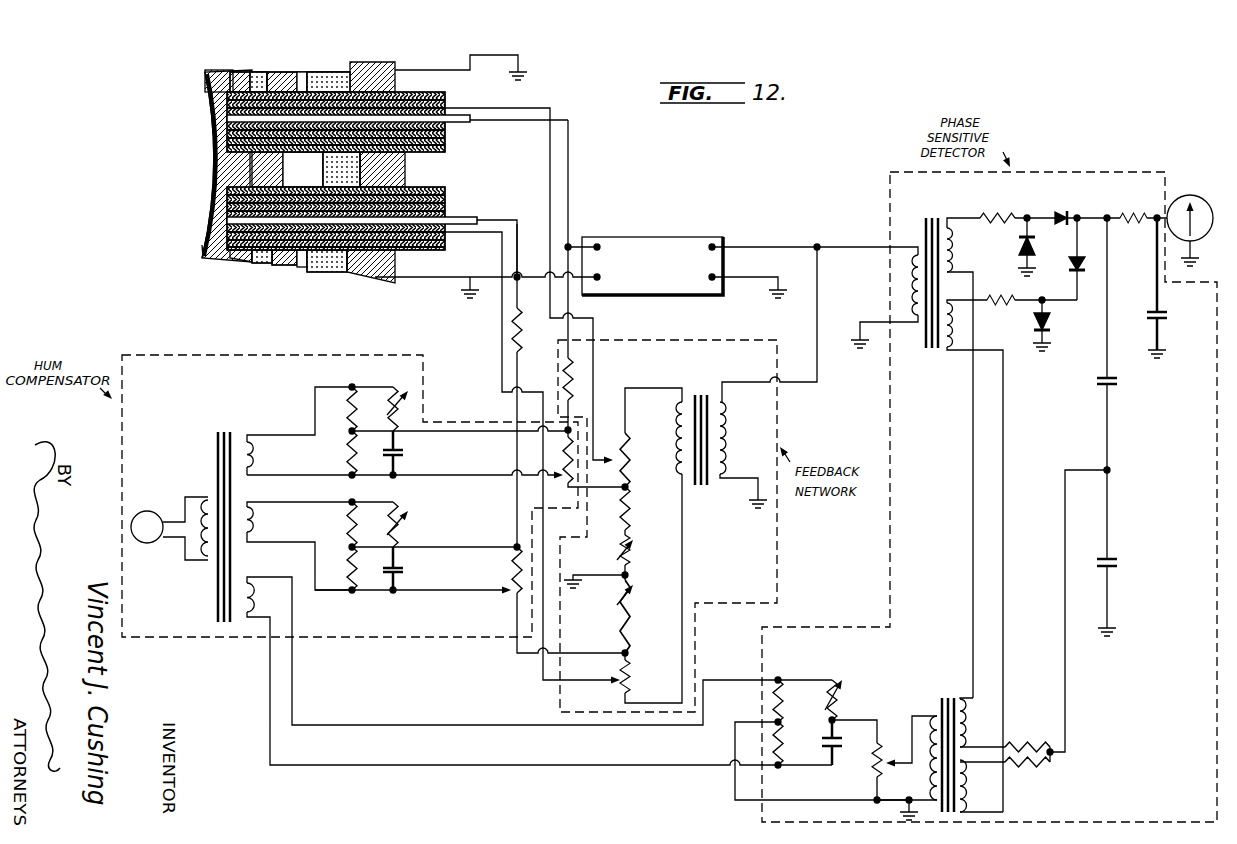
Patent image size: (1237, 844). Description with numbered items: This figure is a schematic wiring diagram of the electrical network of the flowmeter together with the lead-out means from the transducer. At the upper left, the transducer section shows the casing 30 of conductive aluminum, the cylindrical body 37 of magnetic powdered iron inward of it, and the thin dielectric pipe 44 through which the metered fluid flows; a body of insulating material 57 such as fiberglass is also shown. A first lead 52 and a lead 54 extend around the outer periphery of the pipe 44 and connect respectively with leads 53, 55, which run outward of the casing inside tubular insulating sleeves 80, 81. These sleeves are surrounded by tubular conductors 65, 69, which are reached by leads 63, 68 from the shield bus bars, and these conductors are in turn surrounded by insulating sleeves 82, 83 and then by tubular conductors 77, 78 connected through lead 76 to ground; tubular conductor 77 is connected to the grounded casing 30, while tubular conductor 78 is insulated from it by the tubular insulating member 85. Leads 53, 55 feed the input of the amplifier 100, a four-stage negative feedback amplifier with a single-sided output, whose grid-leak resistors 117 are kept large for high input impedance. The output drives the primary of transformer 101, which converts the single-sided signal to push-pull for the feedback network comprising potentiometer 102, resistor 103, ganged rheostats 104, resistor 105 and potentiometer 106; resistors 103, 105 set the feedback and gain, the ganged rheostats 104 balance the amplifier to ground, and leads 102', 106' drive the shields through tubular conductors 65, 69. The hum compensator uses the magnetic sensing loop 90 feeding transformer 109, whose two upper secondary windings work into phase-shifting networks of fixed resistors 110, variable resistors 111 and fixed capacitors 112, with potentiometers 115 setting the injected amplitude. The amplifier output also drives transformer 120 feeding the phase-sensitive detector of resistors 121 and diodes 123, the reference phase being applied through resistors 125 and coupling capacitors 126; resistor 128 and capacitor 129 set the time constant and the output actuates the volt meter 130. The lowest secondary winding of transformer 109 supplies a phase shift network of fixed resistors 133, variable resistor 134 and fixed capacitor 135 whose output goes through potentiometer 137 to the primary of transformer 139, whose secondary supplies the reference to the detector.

The casing 30 is at (382, 62).
The cylindrical body 37 is at (330, 70).
The pipe 44 is at (222, 170).
The first lead 52 is at (200, 100).
The lead 53 is at (228, 123).
The lead 54 is at (203, 250).
The lead 55 is at (227, 220).
The body of insulating material 57 is at (218, 75).
The lead 63 is at (243, 90).
The tubular conductor 65 is at (283, 90).
The lead 68 is at (232, 262).
The tubular conductor 69 is at (255, 265).
The lead 76 is at (258, 85).
The tubular conductor 77 is at (301, 90).
The tubular conductor 78 is at (300, 262).
The tubular insulating sleeve 80 is at (447, 120).
The tubular insulating sleeve 81 is at (452, 212).
The insulating sleeve 82 is at (452, 102).
The insulating sleeve 83 is at (450, 193).
The tubular insulating member 85 is at (403, 170).
The magnetic sensing loop 90 is at (152, 510).
The amplifier 100 is at (653, 240).
The transformer 101 is at (705, 500).
The potentiometer 102 is at (643, 458).
The lead 102' is at (529, 286).
The resistor 103 is at (630, 503).
The ganged rheostats 104 is at (635, 574).
The resistor 105 is at (632, 630).
The potentiometer 106 is at (644, 673).
The lead 106' is at (466, 346).
The transformer 109 is at (222, 422).
The fixed resistors 110 is at (347, 417).
The variable resistors 111 is at (390, 392).
The fixed capacitors 112 is at (402, 458).
The potentiometers 115 is at (555, 470).
The resistors 117 is at (513, 334).
The transformer 120 is at (935, 212).
The resistors 121 is at (987, 217).
The diodes 123 is at (1036, 240).
The resistors 125 is at (1030, 745).
The coupling capacitors 126 is at (1112, 388).
The resistor 128 is at (1125, 226).
The capacitor 129 is at (1162, 320).
The volt meter 130 is at (1190, 193).
The fixed resistors 133 is at (785, 728).
The variable resistor 134 is at (847, 697).
The fixed capacitor 135 is at (822, 748).
The potentiometer 137 is at (872, 768).
The transformer 139 is at (944, 692).